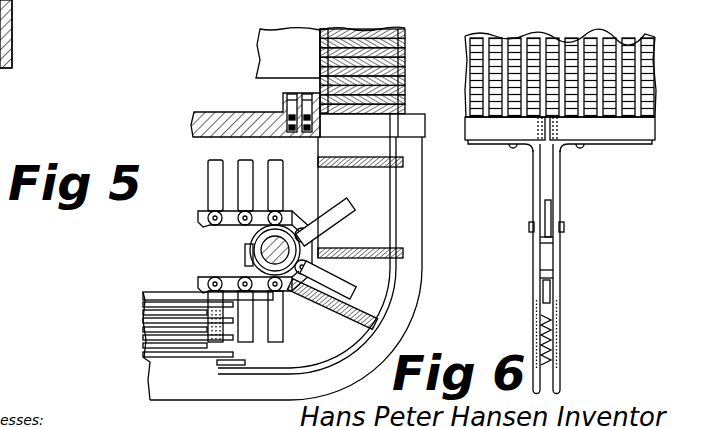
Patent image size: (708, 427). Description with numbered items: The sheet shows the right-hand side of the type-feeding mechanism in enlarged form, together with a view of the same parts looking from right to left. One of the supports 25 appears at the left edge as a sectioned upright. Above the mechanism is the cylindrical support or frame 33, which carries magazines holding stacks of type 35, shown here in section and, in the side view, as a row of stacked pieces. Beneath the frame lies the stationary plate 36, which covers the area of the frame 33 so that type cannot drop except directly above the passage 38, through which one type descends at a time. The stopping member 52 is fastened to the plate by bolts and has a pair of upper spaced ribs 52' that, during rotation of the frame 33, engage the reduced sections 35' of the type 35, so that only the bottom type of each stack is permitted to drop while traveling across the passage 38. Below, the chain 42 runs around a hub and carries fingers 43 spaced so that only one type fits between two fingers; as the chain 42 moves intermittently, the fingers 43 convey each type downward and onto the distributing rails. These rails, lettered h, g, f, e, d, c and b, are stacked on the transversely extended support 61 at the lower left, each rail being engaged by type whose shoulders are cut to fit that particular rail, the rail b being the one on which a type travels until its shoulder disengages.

In FIG. 5, the supports 25 is at (13, 23).
In FIG. 6, the supports 25 is at (632, 8).
In FIG. 5, the chain 42 is at (127, 0).
In FIG. 5, the fingers 43 is at (184, 192).
In FIG. 5, the cylindrical support or frame 33 is at (279, 40).
In FIG. 5, the type 35 is at (375, 60).
In FIG. 6, the type 35 is at (540, 197).
In FIG. 5, the reduced sections of type 35' is at (308, 71).
In FIG. 5, the stationary plate 36 is at (216, 113).
In FIG. 6, the stationary plate 36 is at (483, 140).
In FIG. 5, the stopping member 52 is at (271, 104).
In FIG. 5, the upper spaced ribs 52' is at (372, 125).
In FIG. 5, the passage 38 is at (413, 202).
In FIG. 6, the passage 38 is at (536, 166).
In FIG. 5, the transversely extended support 61 is at (190, 386).
In FIG. 5, the distributing rail h is at (145, 304).
In FIG. 5, the distributing rail g is at (145, 312).
In FIG. 5, the distributing rail f is at (145, 320).
In FIG. 5, the distributing rail e is at (145, 329).
In FIG. 5, the distributing rail d is at (145, 337).
In FIG. 5, the distributing rail c is at (145, 345).
In FIG. 5, the distributing rail b is at (145, 354).